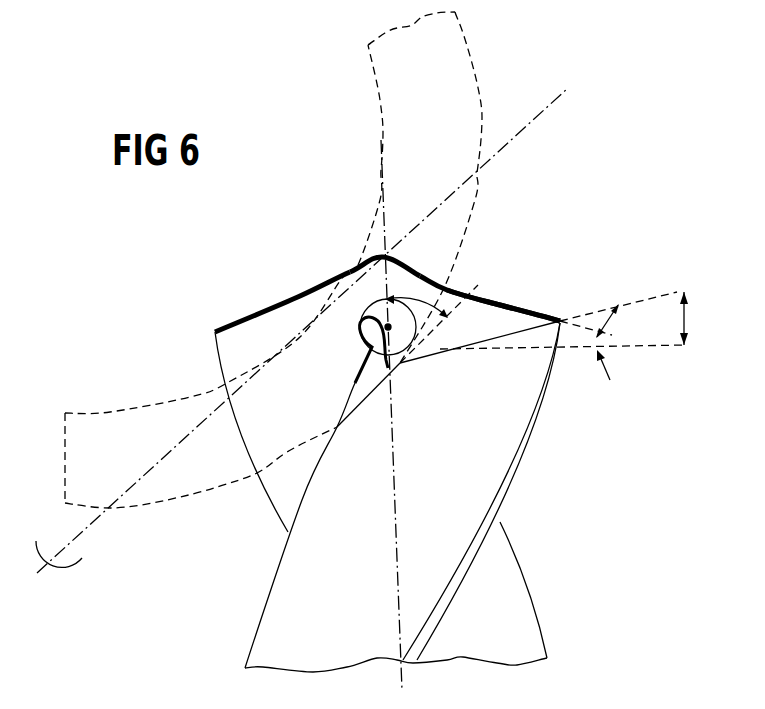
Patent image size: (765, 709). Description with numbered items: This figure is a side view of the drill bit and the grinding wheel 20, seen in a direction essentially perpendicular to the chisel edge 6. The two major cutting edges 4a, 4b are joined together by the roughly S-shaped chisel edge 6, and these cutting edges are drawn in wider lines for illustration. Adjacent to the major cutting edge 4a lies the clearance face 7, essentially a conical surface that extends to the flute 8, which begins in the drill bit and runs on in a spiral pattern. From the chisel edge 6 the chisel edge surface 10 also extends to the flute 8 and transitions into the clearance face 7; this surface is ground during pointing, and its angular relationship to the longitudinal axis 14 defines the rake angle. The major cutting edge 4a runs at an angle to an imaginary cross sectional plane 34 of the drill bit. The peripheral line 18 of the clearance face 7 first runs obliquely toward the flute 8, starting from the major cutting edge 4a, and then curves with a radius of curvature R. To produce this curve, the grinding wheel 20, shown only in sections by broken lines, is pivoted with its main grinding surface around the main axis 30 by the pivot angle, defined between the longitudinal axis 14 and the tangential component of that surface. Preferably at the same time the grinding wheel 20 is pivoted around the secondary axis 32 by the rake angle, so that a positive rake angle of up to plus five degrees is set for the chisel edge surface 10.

The major cutting edge 4a is at (513, 305).
The major cutting edge 4b is at (257, 317).
The chisel edge 6 is at (360, 265).
The clearance face 7 is at (487, 327).
The flute 8 is at (292, 500).
The chisel edge surface 10 is at (358, 320).
The longitudinal axis 14 is at (383, 200).
The peripheral line 18 is at (495, 348).
The grinding wheel 20 is at (85, 410).
The main axis 30 is at (400, 364).
The secondary axis 32 is at (537, 118).
The cross sectional plane 34 is at (661, 347).
The radius of curvature R is at (418, 365).